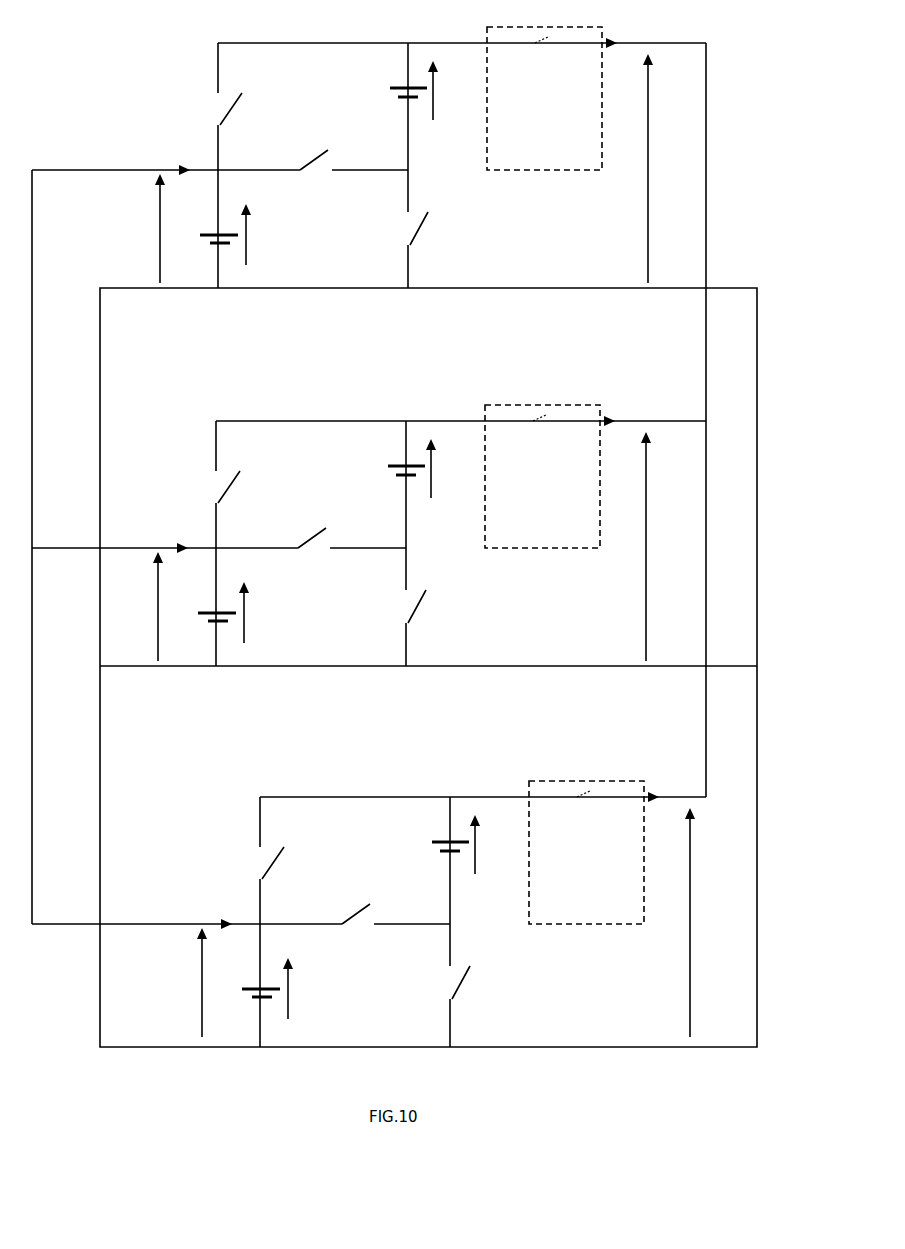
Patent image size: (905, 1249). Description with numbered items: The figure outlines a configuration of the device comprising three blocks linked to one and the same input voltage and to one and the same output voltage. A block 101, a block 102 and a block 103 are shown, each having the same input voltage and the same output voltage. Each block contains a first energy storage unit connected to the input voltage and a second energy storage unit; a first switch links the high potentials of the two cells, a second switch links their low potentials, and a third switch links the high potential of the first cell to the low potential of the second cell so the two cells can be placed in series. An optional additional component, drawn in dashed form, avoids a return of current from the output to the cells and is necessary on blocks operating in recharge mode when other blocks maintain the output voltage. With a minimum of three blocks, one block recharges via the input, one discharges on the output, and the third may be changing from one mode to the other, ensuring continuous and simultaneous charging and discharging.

The block 101 is at (706, 206).
The block 102 is at (705, 507).
The block 103 is at (705, 885).